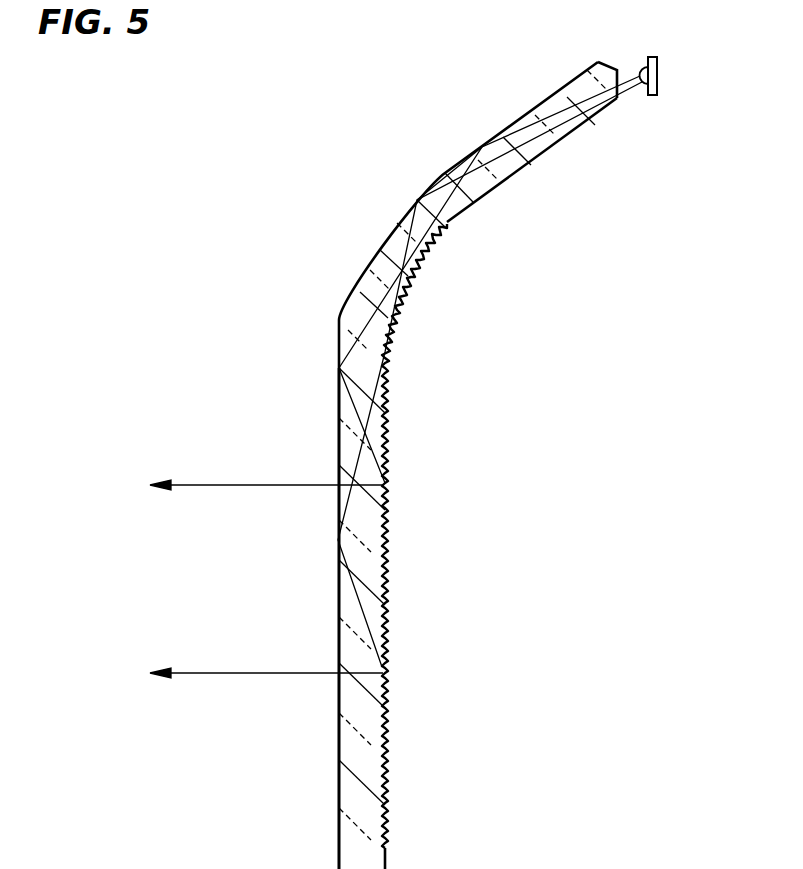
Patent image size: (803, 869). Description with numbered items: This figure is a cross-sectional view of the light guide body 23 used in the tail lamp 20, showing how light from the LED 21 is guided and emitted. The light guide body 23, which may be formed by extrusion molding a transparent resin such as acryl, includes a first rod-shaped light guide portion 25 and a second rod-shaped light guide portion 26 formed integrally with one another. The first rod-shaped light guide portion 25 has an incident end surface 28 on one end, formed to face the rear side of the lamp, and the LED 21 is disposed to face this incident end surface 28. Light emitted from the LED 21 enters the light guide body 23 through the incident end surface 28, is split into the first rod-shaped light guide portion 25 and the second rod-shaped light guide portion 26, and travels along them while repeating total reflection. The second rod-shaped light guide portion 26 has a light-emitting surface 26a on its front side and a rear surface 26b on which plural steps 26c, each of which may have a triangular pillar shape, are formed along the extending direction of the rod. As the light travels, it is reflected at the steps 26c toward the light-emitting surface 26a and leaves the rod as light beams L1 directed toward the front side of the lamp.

The tail lamp 20 is at (368, 142).
The LED 21 is at (658, 78).
The light guide body 23 is at (378, 252).
The first rod-shaped light guide portion 25 is at (540, 103).
The second rod-shaped light guide portion 26 is at (338, 604).
The light-emitting surface 26a is at (339, 420).
The rear surface 26b is at (385, 862).
The steps 26c is at (388, 560).
The incident end surface 28 is at (623, 70).
The light beams L1 is at (216, 482).